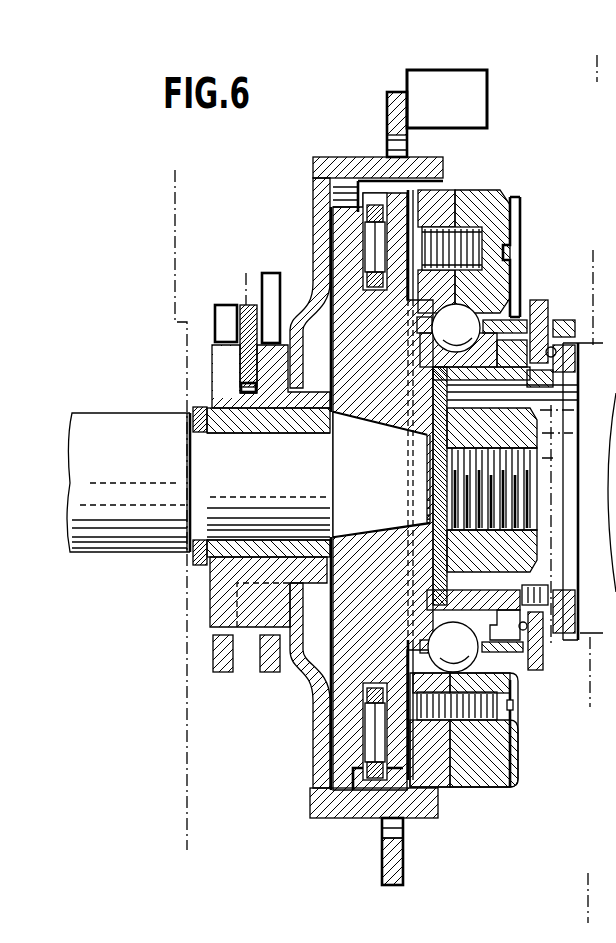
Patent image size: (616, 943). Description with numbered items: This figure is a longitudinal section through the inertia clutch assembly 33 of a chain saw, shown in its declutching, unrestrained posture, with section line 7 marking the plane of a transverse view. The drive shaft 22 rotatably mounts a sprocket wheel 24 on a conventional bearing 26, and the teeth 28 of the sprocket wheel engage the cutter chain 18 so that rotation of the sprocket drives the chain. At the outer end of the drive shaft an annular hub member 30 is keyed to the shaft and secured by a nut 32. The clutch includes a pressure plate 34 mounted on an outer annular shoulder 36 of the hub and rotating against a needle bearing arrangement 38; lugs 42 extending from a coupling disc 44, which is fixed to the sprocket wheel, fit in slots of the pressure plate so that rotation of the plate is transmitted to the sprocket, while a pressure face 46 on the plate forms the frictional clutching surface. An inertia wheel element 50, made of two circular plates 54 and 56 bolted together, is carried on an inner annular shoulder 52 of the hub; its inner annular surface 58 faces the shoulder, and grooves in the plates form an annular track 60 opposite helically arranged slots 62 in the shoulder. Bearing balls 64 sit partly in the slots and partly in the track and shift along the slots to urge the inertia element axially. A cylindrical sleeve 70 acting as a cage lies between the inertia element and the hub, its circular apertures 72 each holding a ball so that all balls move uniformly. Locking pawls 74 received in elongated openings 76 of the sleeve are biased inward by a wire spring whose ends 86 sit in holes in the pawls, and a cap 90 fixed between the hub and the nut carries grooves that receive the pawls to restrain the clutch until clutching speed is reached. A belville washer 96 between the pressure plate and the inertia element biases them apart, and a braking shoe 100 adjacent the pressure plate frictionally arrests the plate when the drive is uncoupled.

The section line 7- 7 is at (598, 58).
The cutter chain 18 is at (226, 310).
The drive shaft 22 is at (140, 538).
The sprocket wheel 24 is at (222, 390).
The bearing 26 is at (207, 552).
The teeth 28 is at (248, 357).
The annular hub member 30 is at (330, 690).
The nut 32 is at (538, 538).
The inertia clutch assembly 33 is at (537, 231).
The pressure plate 34 is at (390, 118).
The outer annular shoulder 36 is at (312, 727).
The needle bearing arrangement 38 is at (373, 243).
The lugs 42 is at (423, 820).
The coupling disc 44 is at (318, 802).
The pressure face 46 is at (392, 207).
The inertia wheel element 50 is at (540, 303).
The inner annular shoulder 52 is at (487, 632).
The circular plate 54 is at (438, 196).
The circular plate 56 is at (490, 196).
The inner annular surface 58 is at (511, 660).
The annular track 60 is at (497, 695).
The slots 62 is at (466, 333).
The bearing balls 64 is at (466, 652).
The cylindrical sleeve 70 is at (575, 653).
The circular apertures 72 is at (512, 282).
The locking pawls 74 is at (572, 630).
The elongated openings 76 is at (560, 325).
The spring ends 86 is at (572, 595).
The cap 90 is at (575, 364).
The belville washer 96 is at (418, 782).
The braking shoe 100 is at (487, 95).